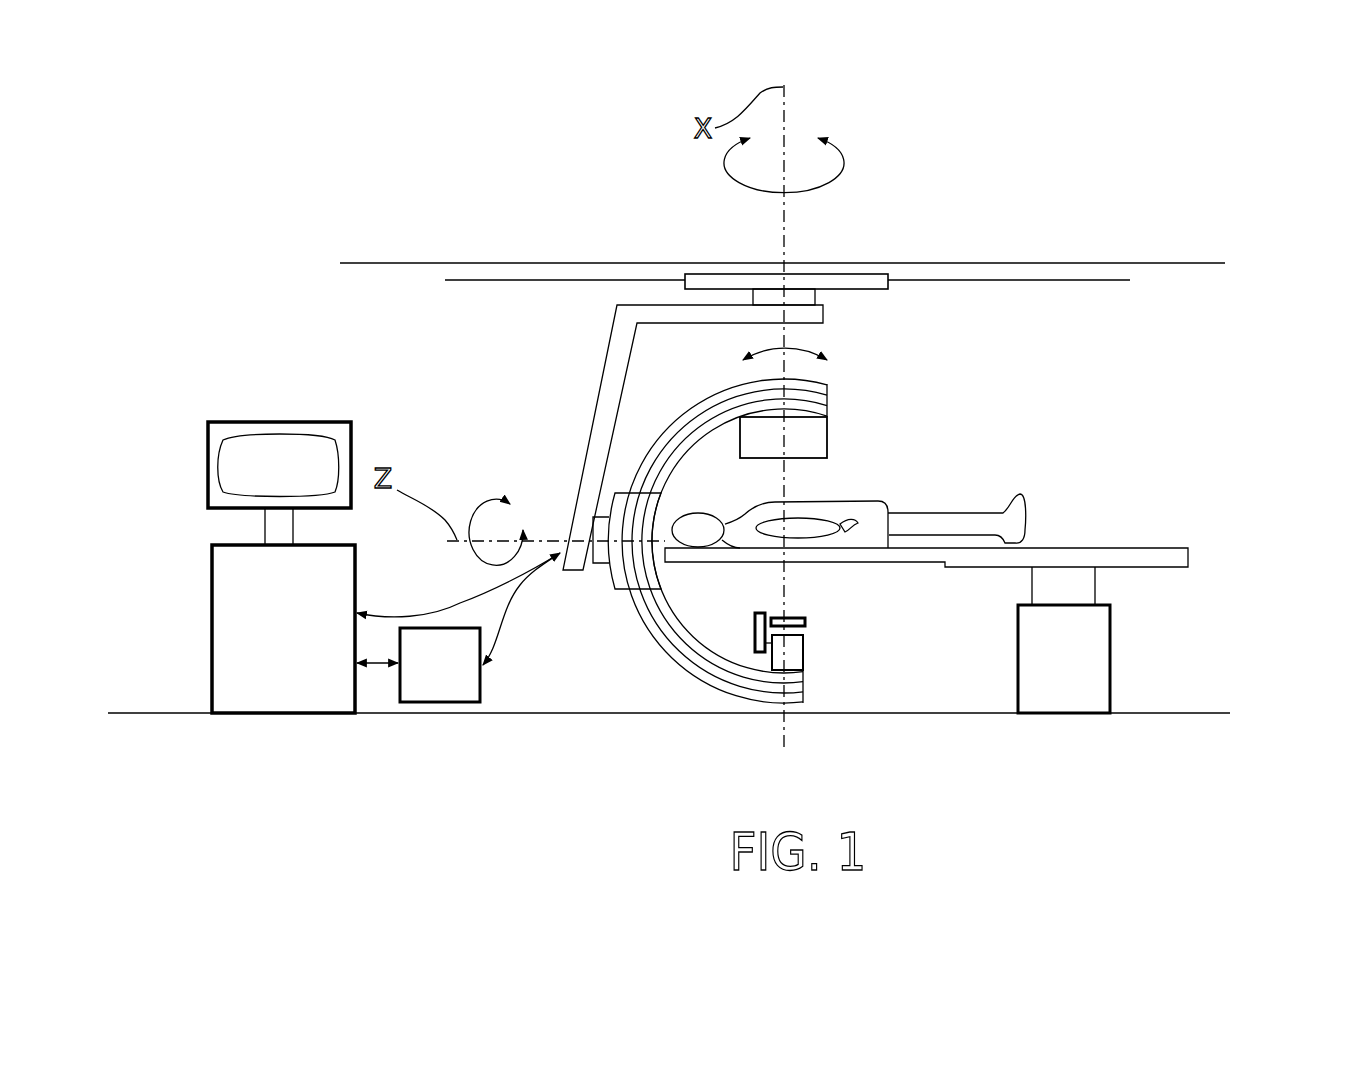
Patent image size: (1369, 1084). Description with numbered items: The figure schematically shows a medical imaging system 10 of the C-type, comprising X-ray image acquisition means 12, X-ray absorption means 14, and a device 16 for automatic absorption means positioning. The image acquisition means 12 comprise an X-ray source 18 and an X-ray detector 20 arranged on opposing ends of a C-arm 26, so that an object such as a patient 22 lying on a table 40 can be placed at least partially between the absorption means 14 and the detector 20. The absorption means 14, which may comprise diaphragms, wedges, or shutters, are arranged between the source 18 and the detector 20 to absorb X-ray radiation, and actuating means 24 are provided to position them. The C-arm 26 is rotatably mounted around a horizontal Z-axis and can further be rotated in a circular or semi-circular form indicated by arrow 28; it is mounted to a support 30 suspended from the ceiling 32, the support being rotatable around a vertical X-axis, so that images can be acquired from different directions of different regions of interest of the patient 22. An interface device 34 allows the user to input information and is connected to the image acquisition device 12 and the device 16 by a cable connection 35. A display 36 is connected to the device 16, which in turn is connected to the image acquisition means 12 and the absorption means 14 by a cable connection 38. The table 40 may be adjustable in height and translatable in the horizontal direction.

The medical imaging system 10 is at (345, 355).
The X-ray image acquisition means 12 is at (848, 380).
The X-ray absorption means 14 is at (795, 618).
The device for automatic absorption means positioning 16 is at (212, 623).
The X-ray source 18 is at (805, 650).
The X-ray detector 20 is at (827, 428).
The patient 22 is at (890, 505).
The actuating means 24 is at (755, 636).
The C-arm 26 is at (641, 632).
The arrow 28 is at (817, 353).
The support 30 is at (598, 394).
The ceiling 32 is at (822, 260).
The interface device 34 is at (463, 692).
The cable connection 35 is at (375, 665).
The display 36 is at (208, 458).
The cable connection 38 is at (440, 616).
The table 40 is at (995, 567).